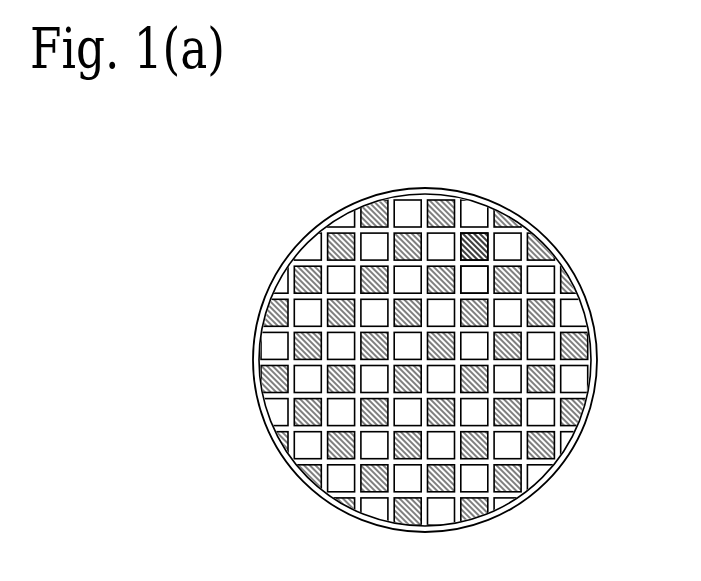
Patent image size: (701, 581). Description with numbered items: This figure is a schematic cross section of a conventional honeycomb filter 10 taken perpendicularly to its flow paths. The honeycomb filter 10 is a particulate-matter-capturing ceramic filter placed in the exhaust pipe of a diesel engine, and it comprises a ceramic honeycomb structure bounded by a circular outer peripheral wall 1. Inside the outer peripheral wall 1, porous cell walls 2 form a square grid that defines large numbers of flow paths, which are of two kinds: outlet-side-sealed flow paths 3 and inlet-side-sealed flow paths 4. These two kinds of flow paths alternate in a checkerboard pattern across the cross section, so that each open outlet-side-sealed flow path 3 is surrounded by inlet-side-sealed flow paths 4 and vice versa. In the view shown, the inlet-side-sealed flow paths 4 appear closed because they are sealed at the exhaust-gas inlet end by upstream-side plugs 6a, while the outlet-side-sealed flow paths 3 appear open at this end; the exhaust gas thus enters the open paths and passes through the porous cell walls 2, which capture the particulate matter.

The honeycomb filter 10 is at (252, 176).
The outer peripheral wall 1 is at (338, 220).
The porous cell walls 2 is at (407, 234).
The outlet-side-sealed flow paths 3 is at (477, 278).
The inlet-side-sealed flow paths 4 is at (473, 250).
The upstream-side plugs 6a is at (476, 249).